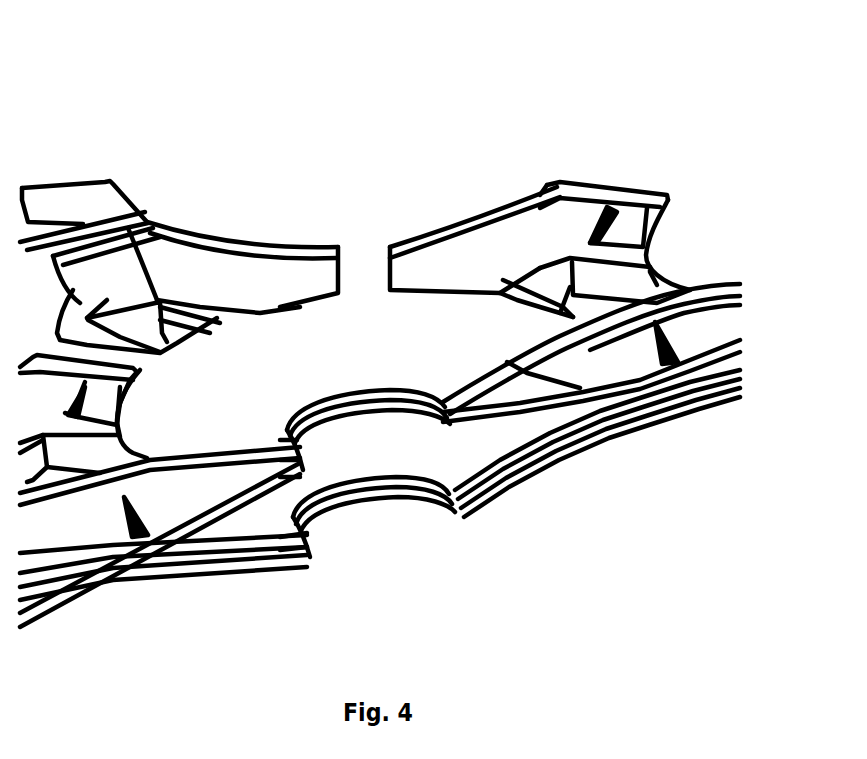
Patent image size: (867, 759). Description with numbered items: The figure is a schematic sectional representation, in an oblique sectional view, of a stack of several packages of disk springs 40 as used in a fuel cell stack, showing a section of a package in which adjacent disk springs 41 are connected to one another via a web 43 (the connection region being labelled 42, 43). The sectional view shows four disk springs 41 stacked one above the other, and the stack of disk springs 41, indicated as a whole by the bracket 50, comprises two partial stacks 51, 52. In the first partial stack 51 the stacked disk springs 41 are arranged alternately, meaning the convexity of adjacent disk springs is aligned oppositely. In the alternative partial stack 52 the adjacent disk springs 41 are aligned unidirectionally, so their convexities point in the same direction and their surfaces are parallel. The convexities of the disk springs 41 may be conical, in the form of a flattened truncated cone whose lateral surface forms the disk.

The disk spring 40 is at (621, 84).
The disk spring 41 is at (345, 363).
The strut 42 is at (84, 357).
The web 43 is at (215, 133).
The layered lattice 50 is at (681, 497).
The first partial stack 51 is at (777, 278).
The second partial stack 52 is at (753, 360).